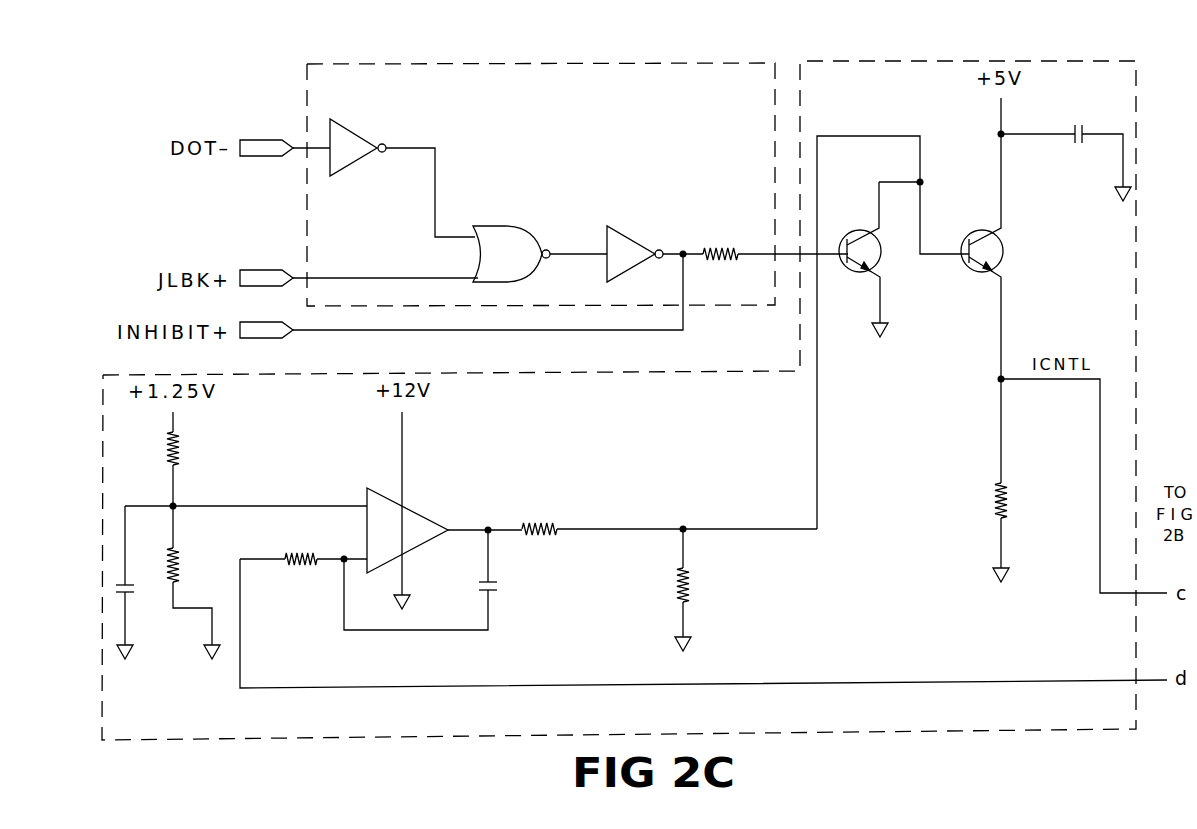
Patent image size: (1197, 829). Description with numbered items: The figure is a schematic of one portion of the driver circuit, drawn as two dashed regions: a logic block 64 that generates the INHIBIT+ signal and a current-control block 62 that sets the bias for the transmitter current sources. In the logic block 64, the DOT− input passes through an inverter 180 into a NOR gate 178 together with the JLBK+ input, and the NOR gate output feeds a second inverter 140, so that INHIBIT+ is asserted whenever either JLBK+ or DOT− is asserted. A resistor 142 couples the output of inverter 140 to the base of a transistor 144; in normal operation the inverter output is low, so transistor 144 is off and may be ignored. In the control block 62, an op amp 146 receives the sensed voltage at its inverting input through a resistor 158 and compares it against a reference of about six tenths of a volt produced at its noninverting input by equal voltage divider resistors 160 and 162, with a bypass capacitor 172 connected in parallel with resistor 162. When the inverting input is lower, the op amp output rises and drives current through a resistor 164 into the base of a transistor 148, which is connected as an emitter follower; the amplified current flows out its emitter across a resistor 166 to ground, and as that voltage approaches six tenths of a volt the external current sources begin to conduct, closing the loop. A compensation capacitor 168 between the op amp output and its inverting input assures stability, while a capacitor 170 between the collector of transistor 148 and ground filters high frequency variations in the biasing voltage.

The current control circuit 62 is at (1138, 127).
The logic circuit 64 is at (305, 118).
The inverter 140 is at (627, 226).
The resistor 142 is at (722, 247).
The transistor 144 is at (850, 235).
The op amp 146 is at (445, 515).
The transistor 148 is at (975, 276).
The resistor 158 is at (297, 575).
The voltage divider resistor 160 is at (180, 447).
The voltage divider resistor 162 is at (188, 566).
The resistor 164 is at (548, 518).
The resistor 166 is at (993, 503).
The capacitor 168 is at (500, 582).
The capacitor 170 is at (1076, 147).
The bypass capacitor 172 is at (140, 590).
The NOR gate 178 is at (497, 227).
The inverter 180 is at (370, 135).